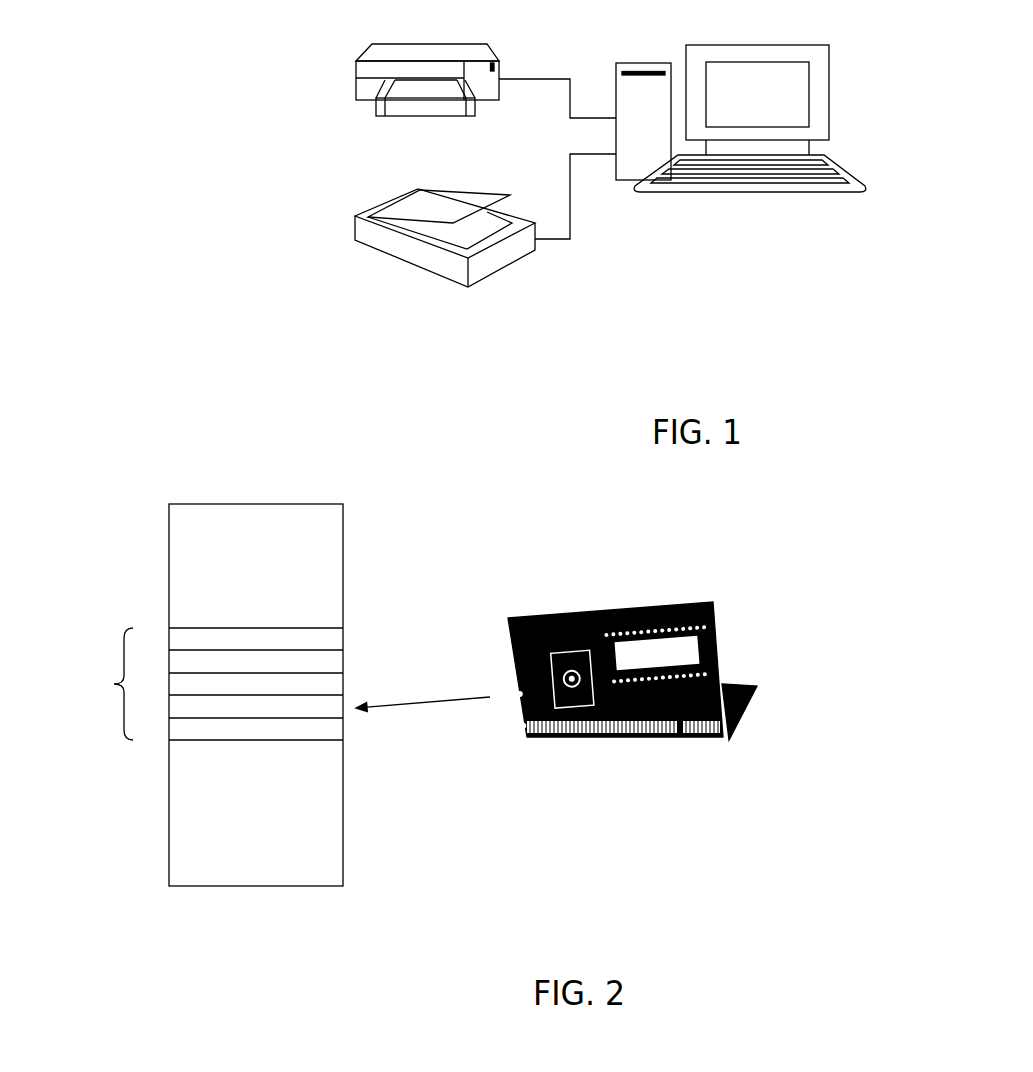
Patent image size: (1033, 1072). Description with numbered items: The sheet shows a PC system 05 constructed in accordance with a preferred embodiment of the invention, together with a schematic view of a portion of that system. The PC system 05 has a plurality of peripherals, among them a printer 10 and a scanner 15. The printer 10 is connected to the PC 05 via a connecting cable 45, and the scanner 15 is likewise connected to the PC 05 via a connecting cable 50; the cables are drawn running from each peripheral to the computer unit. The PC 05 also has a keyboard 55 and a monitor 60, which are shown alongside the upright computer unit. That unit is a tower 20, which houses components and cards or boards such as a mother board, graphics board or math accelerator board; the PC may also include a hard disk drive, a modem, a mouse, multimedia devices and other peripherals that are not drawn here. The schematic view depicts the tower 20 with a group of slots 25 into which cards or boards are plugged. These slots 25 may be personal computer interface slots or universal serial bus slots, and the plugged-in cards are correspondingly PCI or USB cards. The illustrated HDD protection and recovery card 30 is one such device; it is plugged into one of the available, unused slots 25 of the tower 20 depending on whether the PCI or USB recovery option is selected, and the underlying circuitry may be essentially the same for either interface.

In FIG. 1, the PC system 05 is at (787, 266).
In FIG. 1, the printer 10 is at (343, 38).
In FIG. 1, the scanner 15 is at (355, 269).
In FIG. 1, the connecting cable 45 is at (542, 54).
In FIG. 1, the connecting cable 50 is at (593, 242).
In FIG. 1, the keyboard 55 is at (860, 163).
In FIG. 1, the monitor 60 is at (857, 75).
In FIG. 2, the tower 20 is at (172, 483).
In FIG. 2, the slots 25 is at (101, 665).
In FIG. 2, the HDD protection and recovery card 30 is at (761, 750).